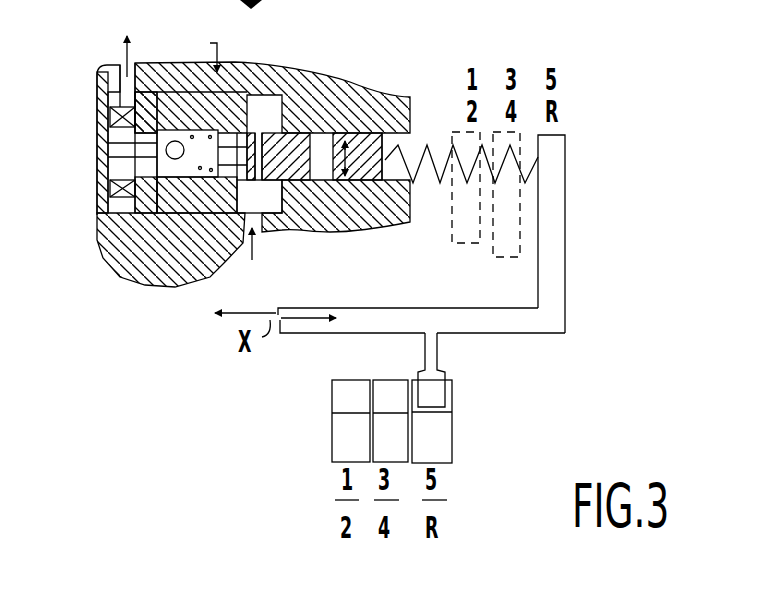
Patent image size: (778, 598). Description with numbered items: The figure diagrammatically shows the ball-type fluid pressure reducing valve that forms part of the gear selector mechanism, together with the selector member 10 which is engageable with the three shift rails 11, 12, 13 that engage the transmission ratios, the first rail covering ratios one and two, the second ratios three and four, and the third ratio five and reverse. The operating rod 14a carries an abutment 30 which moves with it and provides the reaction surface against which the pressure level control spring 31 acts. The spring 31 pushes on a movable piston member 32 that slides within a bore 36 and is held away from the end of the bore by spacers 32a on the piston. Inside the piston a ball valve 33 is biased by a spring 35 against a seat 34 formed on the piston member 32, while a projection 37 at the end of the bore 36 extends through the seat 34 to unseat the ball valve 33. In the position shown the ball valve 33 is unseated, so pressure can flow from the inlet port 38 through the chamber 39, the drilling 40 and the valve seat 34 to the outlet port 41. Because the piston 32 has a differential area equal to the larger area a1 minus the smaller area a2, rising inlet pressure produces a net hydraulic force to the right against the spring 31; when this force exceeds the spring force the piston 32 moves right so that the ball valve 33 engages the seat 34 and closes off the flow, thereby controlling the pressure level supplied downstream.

The selector member 10 is at (432, 388).
The shift rail 11 is at (345, 437).
The shift rail 12 is at (398, 440).
The shift rail 13 is at (440, 432).
The operating rod 14a is at (413, 310).
The abutment 30 is at (558, 265).
The pressure level control spring 31 is at (427, 148).
The piston member 32 is at (293, 93).
The spacers 32a is at (106, 96).
The ball valve 33 is at (175, 215).
The seat 34 is at (112, 112).
The spring 35 is at (190, 125).
The bore 36 is at (110, 187).
The projection 37 is at (113, 158).
The inlet port 38 is at (266, 236).
The chamber 39 is at (327, 233).
The drilling 40 is at (243, 100).
The outlet port 41 is at (112, 90).
The larger area a1 is at (212, 255).
The smaller area a2 is at (329, 154).